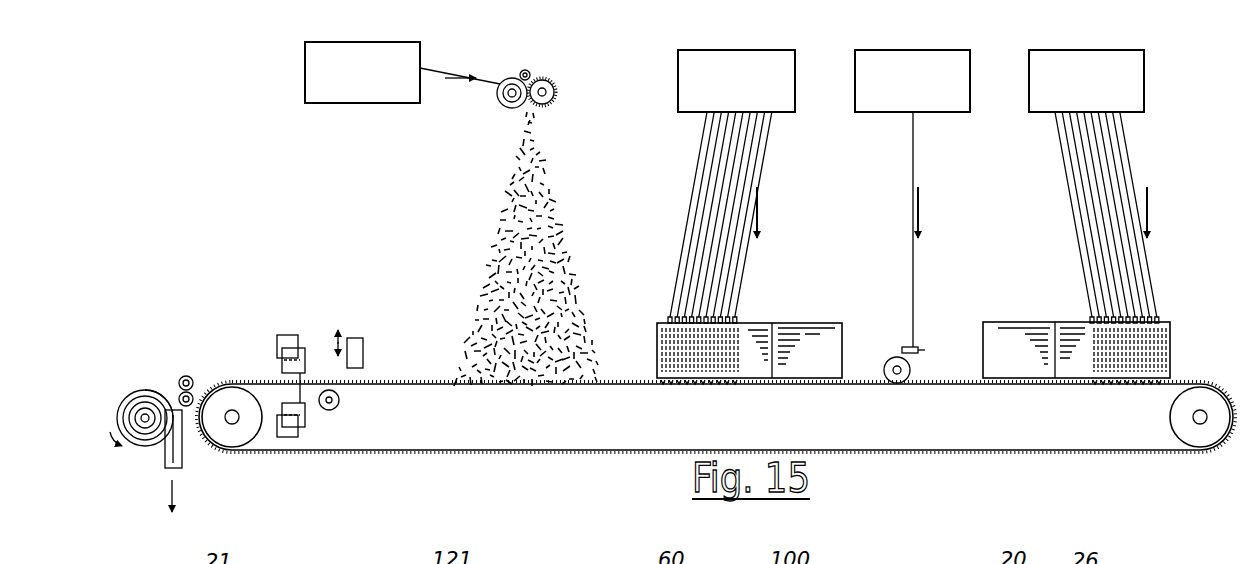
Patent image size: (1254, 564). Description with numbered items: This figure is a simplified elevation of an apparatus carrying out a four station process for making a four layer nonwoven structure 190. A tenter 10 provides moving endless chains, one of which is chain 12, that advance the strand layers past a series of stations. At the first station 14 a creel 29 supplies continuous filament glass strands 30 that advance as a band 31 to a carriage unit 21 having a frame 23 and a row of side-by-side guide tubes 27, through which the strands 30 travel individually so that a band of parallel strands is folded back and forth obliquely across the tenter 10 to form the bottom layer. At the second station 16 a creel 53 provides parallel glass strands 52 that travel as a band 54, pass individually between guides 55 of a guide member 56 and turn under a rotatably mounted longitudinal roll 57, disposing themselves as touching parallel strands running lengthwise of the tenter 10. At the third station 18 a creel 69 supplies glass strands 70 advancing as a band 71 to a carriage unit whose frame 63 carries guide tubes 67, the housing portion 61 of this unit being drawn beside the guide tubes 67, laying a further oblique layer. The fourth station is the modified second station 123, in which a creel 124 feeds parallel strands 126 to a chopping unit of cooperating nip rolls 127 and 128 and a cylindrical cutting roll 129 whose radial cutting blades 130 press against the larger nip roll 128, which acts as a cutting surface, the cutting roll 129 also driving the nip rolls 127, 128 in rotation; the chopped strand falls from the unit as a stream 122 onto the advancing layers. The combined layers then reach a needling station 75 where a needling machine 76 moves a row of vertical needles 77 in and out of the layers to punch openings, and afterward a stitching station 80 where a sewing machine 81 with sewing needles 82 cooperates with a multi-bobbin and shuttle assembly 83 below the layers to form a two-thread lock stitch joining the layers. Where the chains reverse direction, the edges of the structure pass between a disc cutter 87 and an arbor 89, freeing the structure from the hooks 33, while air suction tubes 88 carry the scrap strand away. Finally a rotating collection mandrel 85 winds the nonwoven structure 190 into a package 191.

The tenter 10 is at (895, 452).
The tenter chain 12 is at (1212, 384).
The first station 14 is at (1142, 158).
The second station 16 is at (922, 158).
The third station 18 is at (772, 157).
The carriage unit 21 is at (1040, 318).
The frame 23 is at (982, 360).
The guide tubes 27 is at (1092, 318).
The creel 29 is at (1110, 50).
The glass strands 30 is at (1080, 120).
The band 31 is at (1138, 178).
The hooks 33 is at (880, 383).
The glass strands 52 is at (916, 140).
The creel 53 is at (913, 48).
The band 54 is at (912, 180).
The guides 55 is at (907, 346).
The guide member 56 is at (920, 350).
The longitudinal roll 57 is at (892, 356).
The knitting machine housing 61 is at (834, 318).
The frame 63 is at (657, 332).
The guide tubes 67 is at (668, 318).
The creel 69 is at (757, 48).
The glass strands 70 is at (712, 120).
The band 71 is at (762, 178).
The needling station 75 is at (366, 345).
The needling machine 76 is at (352, 338).
The needles 77 is at (360, 370).
The stitching station 80 is at (288, 330).
The sewing machine 81 is at (277, 340).
The sewing needles 82 is at (283, 370).
The multi-bobbin and shuttle assembly 83 is at (305, 416).
The collection mandrel 85 is at (125, 418).
The disc cutter 87 is at (182, 378).
The air suction tubes 88 is at (165, 465).
The arbor 89 is at (194, 396).
The fiber stream 122 is at (487, 192).
The modified second station 123 is at (508, 146).
The creel 124 is at (305, 44).
The strands 126 is at (478, 78).
The nip roll 127 is at (540, 47).
The nip roll 128 is at (500, 100).
The cutting roll 129 is at (556, 88).
The cutting blades 130 is at (552, 80).
The nonwoven structure 190 is at (165, 392).
The package 191 is at (148, 445).